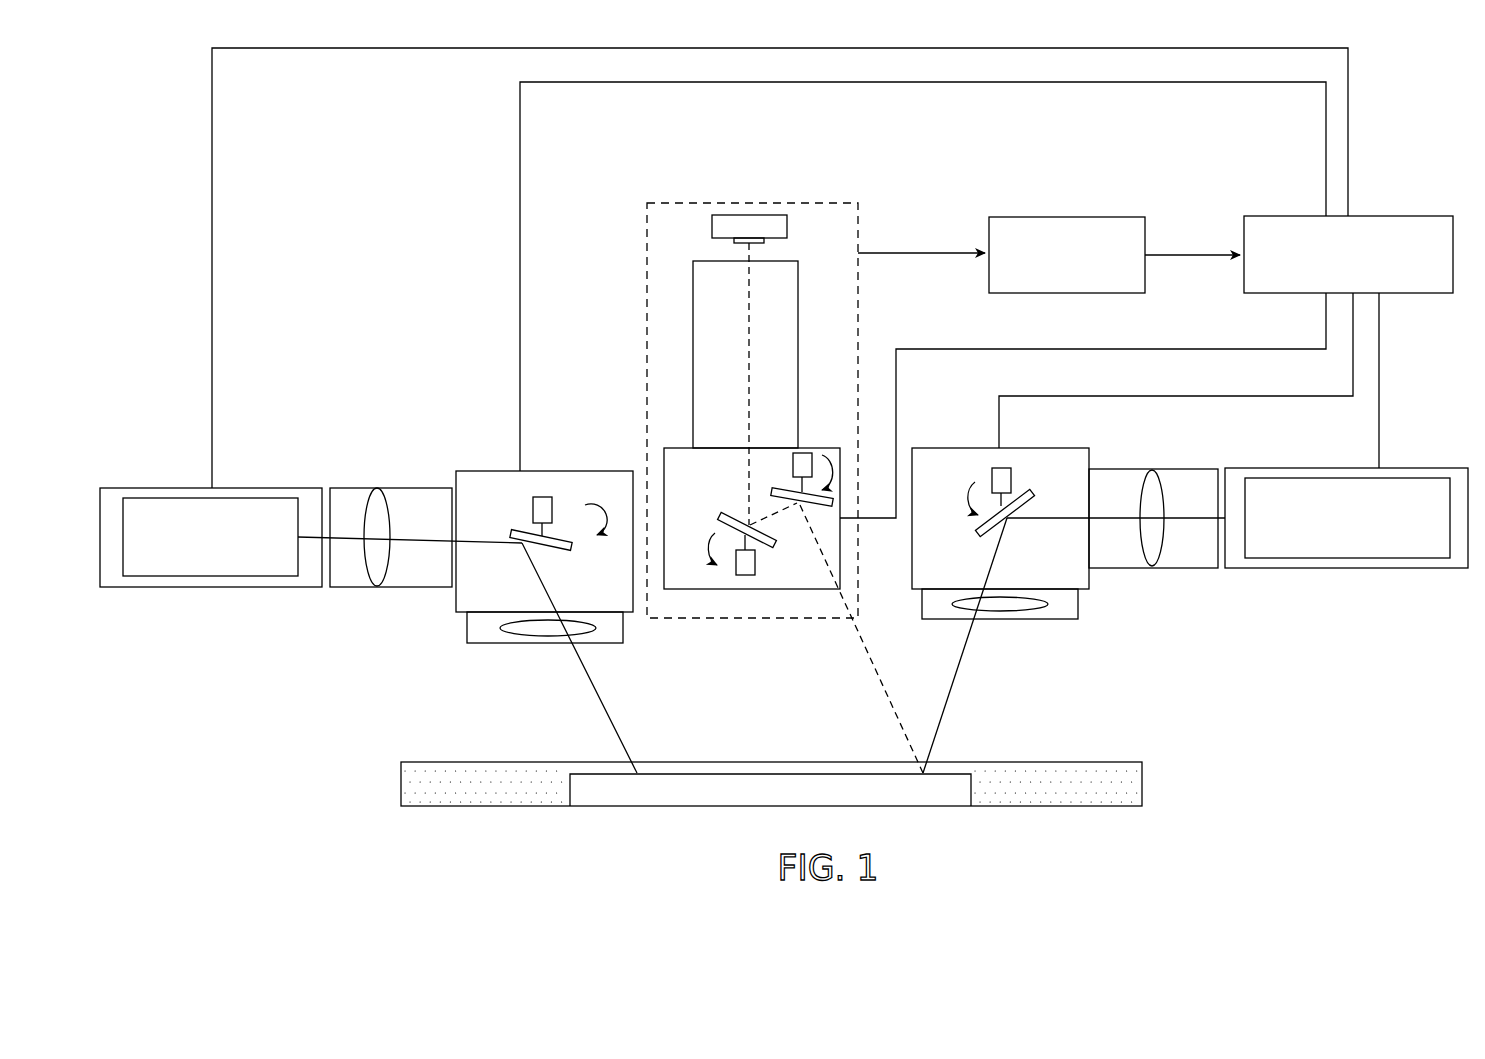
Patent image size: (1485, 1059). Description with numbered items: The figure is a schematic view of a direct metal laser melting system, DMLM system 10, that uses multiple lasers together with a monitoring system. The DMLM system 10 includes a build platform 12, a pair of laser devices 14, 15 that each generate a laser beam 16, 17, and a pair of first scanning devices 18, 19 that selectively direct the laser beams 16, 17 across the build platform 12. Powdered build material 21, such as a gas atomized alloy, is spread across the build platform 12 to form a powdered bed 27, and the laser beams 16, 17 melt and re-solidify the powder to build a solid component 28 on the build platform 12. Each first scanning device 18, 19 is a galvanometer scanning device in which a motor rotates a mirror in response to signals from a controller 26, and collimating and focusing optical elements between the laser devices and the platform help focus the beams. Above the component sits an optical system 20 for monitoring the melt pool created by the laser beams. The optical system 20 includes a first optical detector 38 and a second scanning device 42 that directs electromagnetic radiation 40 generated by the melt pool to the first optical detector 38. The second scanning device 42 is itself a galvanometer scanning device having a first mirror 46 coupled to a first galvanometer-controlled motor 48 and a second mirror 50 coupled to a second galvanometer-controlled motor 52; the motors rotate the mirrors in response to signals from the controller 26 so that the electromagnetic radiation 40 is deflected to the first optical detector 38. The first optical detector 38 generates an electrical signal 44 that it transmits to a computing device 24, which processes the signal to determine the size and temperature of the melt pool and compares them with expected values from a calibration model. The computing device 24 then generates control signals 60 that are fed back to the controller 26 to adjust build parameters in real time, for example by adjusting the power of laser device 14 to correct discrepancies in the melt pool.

The DMLM system 10 is at (668, 152).
The build platform 12 is at (1113, 762).
The laser device 14 is at (1404, 478).
The laser device 15 is at (253, 497).
The laser beam 16 is at (1198, 520).
The laser beam 17 is at (308, 540).
The first scanning device 18 is at (920, 447).
The first scanning device 19 is at (477, 470).
The optical system 20 is at (635, 220).
The powdered build material 21 is at (1052, 770).
The computing device 24 is at (1068, 216).
The controller 26 is at (1386, 216).
The powdered bed 27 is at (843, 773).
The solid component 28 is at (750, 775).
The first optical detector 38 is at (751, 215).
The electromagnetic radiation 40 is at (880, 656).
The second scanning device 42 is at (670, 447).
The electrical signal 44 is at (921, 253).
The first mirror 46 is at (770, 488).
The first galvanometer-controlled motor 48 is at (801, 453).
The second mirror 50 is at (720, 517).
The second galvanometer-controlled motor 52 is at (745, 577).
The control signal 60 is at (1194, 253).